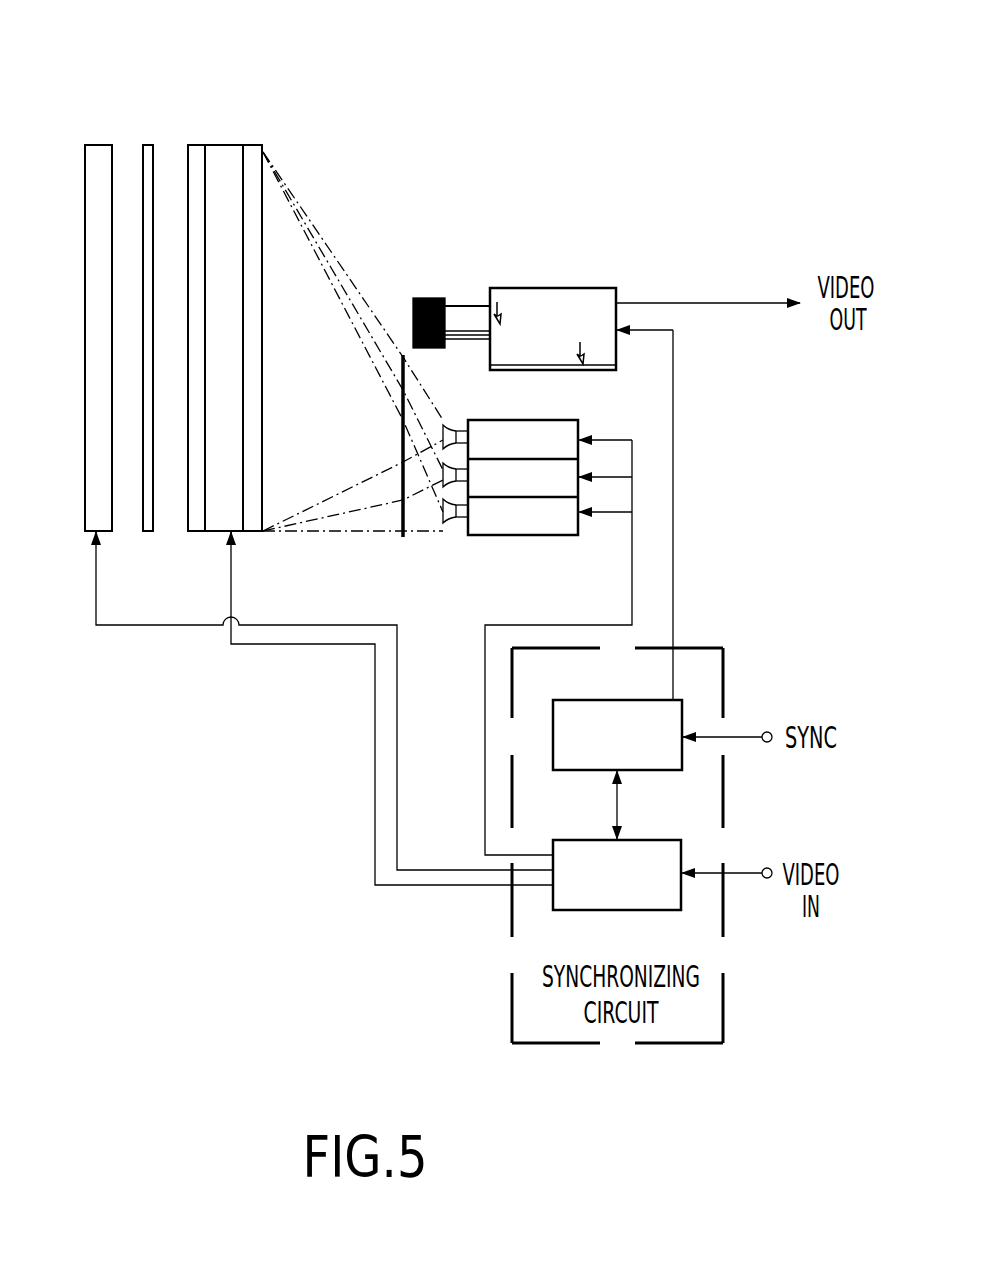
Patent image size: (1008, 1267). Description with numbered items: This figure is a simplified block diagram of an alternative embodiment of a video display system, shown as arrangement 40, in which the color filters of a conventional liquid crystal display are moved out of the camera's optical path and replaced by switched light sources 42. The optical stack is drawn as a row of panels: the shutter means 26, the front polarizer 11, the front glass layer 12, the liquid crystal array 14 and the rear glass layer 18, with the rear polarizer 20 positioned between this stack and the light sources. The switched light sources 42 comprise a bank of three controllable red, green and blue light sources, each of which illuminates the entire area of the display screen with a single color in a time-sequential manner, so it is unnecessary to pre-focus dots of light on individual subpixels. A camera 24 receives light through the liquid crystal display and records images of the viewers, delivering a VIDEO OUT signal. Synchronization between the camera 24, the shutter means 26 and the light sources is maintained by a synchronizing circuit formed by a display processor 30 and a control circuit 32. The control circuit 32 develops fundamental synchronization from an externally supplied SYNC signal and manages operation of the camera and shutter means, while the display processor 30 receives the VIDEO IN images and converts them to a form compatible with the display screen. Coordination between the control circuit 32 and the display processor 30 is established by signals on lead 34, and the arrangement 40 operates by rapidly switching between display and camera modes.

The arrangement 40 is at (419, 35).
The shutter means 26 is at (102, 144).
The front polarizer 11 is at (148, 144).
The front glass layer 12 is at (197, 144).
The liquid crystal array 14 is at (220, 144).
The rear glass layer 18 is at (257, 144).
The rear polarizer 20 is at (403, 540).
The camera 24 is at (572, 371).
The switched light sources 42 is at (523, 537).
The control circuit 32 is at (575, 700).
The lead 34 is at (620, 799).
The display processor 30 is at (573, 910).